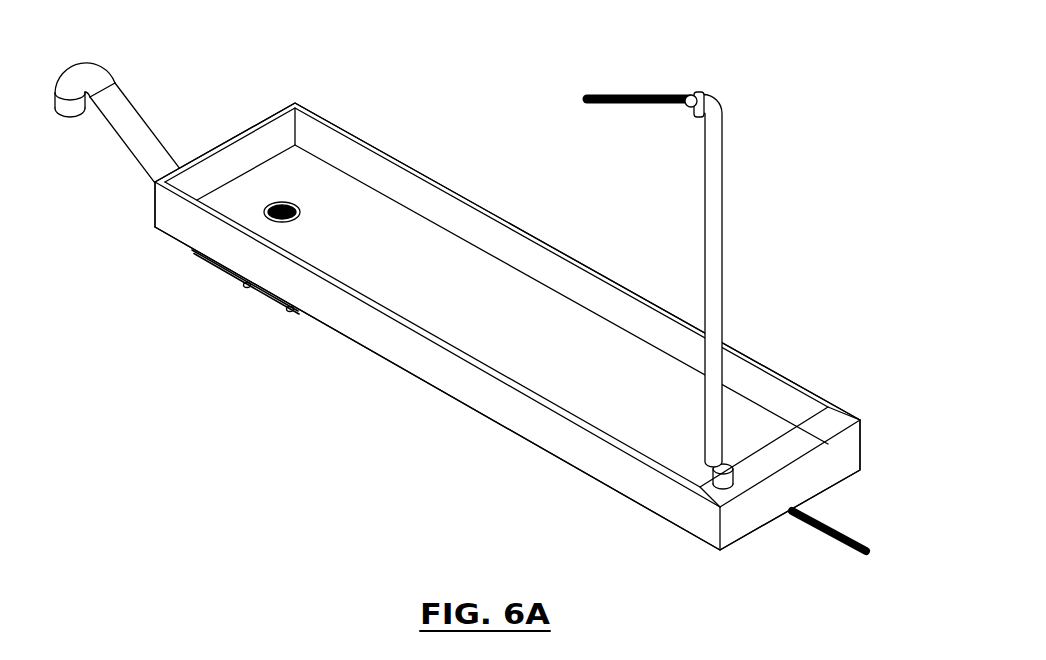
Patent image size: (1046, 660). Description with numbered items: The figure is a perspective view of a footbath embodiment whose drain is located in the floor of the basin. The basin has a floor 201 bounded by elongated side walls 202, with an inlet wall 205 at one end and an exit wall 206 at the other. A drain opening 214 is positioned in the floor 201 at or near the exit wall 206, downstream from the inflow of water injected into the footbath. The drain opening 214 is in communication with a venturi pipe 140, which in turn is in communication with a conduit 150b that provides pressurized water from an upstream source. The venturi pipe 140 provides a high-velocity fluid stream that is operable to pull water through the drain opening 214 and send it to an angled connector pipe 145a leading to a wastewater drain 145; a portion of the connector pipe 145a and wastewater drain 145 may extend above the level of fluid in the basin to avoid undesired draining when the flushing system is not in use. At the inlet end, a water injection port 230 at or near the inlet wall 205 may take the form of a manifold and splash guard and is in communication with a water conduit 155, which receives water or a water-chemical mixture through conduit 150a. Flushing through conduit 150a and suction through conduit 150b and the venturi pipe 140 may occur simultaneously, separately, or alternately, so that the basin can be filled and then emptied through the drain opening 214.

The venturi pipe 140 is at (258, 302).
The wastewater drain 145 is at (80, 86).
The angled connector pipe 145a is at (132, 115).
The conduit 150a is at (652, 94).
The conduit 150b is at (851, 535).
The water conduit 155 is at (723, 288).
The floor 201 is at (455, 303).
The elongated side wall 202 is at (358, 312).
The inlet wall 205 is at (755, 515).
The exit wall 206 is at (222, 173).
The drain opening 214 is at (293, 202).
The water injection port 230 is at (817, 435).